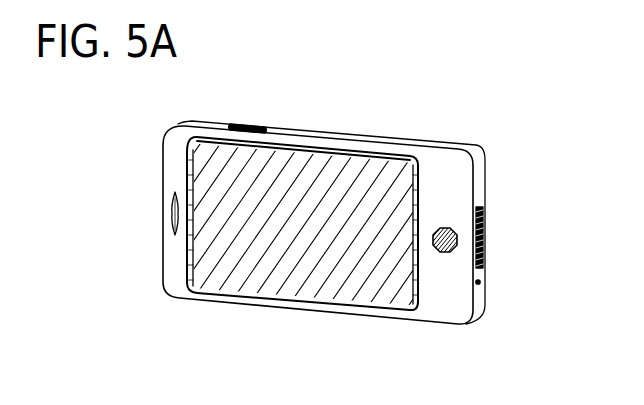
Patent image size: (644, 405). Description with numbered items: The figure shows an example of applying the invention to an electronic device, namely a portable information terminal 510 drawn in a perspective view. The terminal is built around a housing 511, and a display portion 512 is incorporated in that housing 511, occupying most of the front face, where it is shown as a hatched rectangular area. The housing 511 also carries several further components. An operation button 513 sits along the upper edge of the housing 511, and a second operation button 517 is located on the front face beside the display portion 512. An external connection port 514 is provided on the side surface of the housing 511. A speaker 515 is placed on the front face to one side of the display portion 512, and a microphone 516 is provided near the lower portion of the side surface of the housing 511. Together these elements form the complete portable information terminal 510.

The portable information terminal 510 is at (416, 101).
The housing 511 is at (442, 308).
The display portion 512 is at (210, 185).
The operation button 513 is at (255, 127).
The external connection port 514 is at (485, 235).
The speaker 515 is at (175, 222).
The microphone 516 is at (479, 285).
The operation button 517 is at (450, 222).